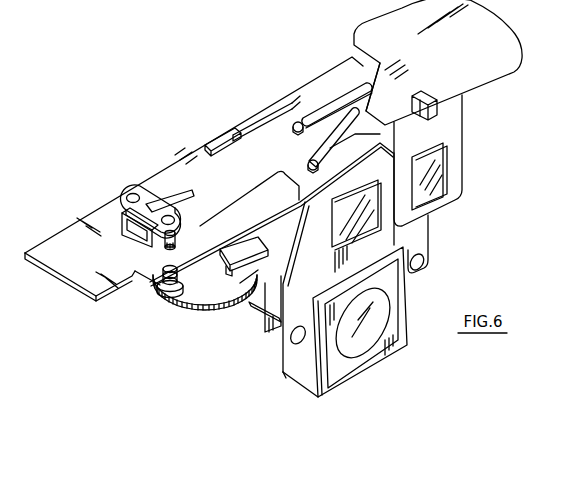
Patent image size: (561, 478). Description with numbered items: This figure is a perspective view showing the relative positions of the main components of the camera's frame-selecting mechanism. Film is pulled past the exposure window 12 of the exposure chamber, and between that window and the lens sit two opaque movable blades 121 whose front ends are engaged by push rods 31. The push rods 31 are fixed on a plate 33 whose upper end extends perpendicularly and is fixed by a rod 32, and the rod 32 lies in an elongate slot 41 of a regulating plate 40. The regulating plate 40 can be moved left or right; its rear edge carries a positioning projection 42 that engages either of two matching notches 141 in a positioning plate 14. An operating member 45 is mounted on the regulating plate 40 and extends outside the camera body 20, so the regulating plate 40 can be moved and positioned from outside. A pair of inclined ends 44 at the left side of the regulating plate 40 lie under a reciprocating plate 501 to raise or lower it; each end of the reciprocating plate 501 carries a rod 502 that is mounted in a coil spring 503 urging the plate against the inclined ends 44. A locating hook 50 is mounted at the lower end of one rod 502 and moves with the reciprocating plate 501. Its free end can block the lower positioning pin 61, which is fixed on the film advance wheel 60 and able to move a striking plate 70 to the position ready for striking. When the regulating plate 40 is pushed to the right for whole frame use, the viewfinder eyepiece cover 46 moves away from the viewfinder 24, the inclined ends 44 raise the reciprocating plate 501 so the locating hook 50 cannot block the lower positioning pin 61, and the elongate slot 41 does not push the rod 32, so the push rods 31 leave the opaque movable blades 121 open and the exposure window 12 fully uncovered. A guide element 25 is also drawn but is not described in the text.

The exposure window 12 is at (366, 340).
The positioning plate 14 is at (286, 97).
The camera body 20 is at (498, 72).
The viewfinder 24 is at (342, 215).
The guide 25 is at (290, 137).
The push rods 31 is at (262, 327).
The rod 32 is at (310, 163).
The plate 33 is at (285, 374).
The regulating plate 40 is at (455, 137).
The elongate slot 41 is at (357, 124).
The positioning projection 42 is at (296, 94).
The inclined ends 44 is at (180, 193).
The operating member 45 is at (430, 95).
The viewfinder eyepiece cover 46 is at (435, 182).
The locating hook 50 is at (162, 300).
The film advance wheel 60 is at (208, 280).
The lower positioning pin 61 is at (233, 297).
The striking plate 70 is at (257, 252).
The opaque movable blades 121 is at (247, 342).
The matching notches 141 is at (245, 128).
The reciprocating plate 501 is at (147, 207).
The rod 502 is at (150, 252).
The coil spring 503 is at (170, 300).